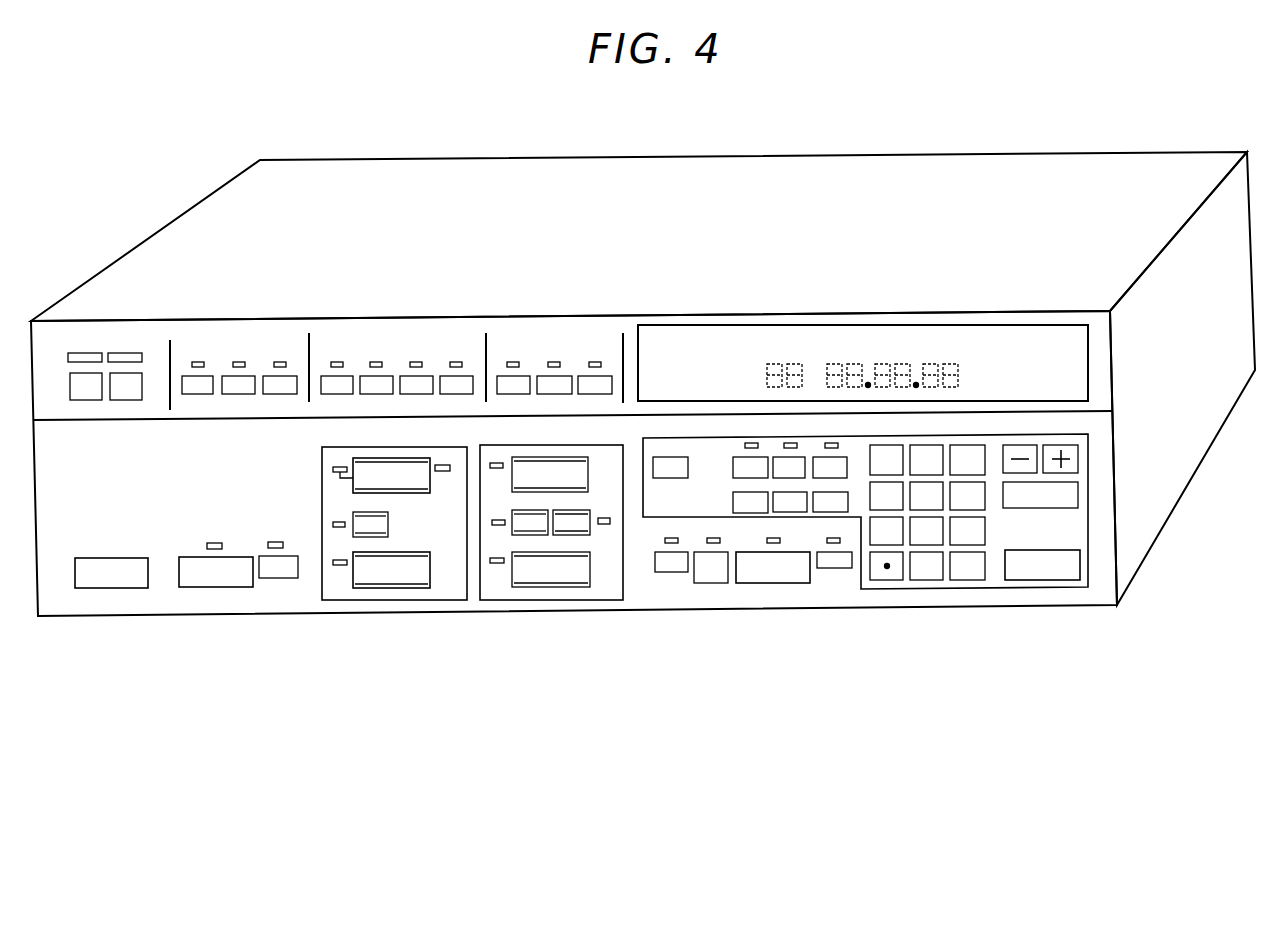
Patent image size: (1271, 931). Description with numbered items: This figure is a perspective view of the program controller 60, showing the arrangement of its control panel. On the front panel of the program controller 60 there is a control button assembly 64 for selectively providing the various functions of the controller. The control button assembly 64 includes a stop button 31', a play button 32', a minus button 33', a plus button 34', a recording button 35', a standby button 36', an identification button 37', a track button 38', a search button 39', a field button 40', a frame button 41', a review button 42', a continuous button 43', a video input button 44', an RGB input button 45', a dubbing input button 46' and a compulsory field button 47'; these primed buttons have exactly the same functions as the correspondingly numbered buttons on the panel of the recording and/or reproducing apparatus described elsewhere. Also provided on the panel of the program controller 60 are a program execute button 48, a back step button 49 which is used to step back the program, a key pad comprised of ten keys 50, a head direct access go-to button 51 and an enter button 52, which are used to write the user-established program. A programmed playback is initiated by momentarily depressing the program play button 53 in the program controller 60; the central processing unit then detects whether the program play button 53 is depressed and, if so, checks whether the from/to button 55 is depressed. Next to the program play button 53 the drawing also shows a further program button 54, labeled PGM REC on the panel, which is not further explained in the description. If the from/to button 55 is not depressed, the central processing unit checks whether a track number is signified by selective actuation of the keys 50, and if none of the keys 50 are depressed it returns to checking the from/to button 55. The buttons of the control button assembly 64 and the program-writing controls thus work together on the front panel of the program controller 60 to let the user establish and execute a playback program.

The program controller 60 is at (401, 169).
The control button assembly 64 is at (641, 303).
The stop (STOP) button 31' is at (123, 608).
The play (PLAY) button 32' is at (218, 608).
The minus (−) button 33' is at (1025, 373).
The plus (+) button 34' is at (1103, 442).
The recording (REC) button 35' is at (398, 605).
The standby (STANDBY) button 36' is at (343, 485).
The ID (identification) button 37' is at (202, 329).
The track (TRACK) button 38' is at (243, 339).
The search (SEARCH) button 39' is at (283, 329).
The field (FIELD) button 40' is at (335, 339).
The frame (FRAME) button 41' is at (381, 329).
The review (REVIEW) button 42' is at (420, 339).
The continuous (CONT) button 43' is at (461, 328).
The video input (VIDEO) button 44' is at (518, 339).
The RGB input button 45' is at (560, 328).
The dubbing input (DUB) button 46' is at (604, 339).
The compulsory field (FIELD ONLY) button 47' is at (291, 607).
The program execute button (EXECUTE) 48 is at (793, 583).
The back step (BACK STEP) button 49 is at (718, 583).
The key pad comprised of ten keys 50 is at (945, 587).
The head direct access "go to" button (GO TO) 51 is at (1038, 508).
The enter button (ENTER) 52 is at (1068, 580).
The program play (PGM PLAY) button 53 is at (777, 457).
The PGM REC key 54 is at (818, 457).
The from/to (FROM/TO) button 55 is at (733, 498).